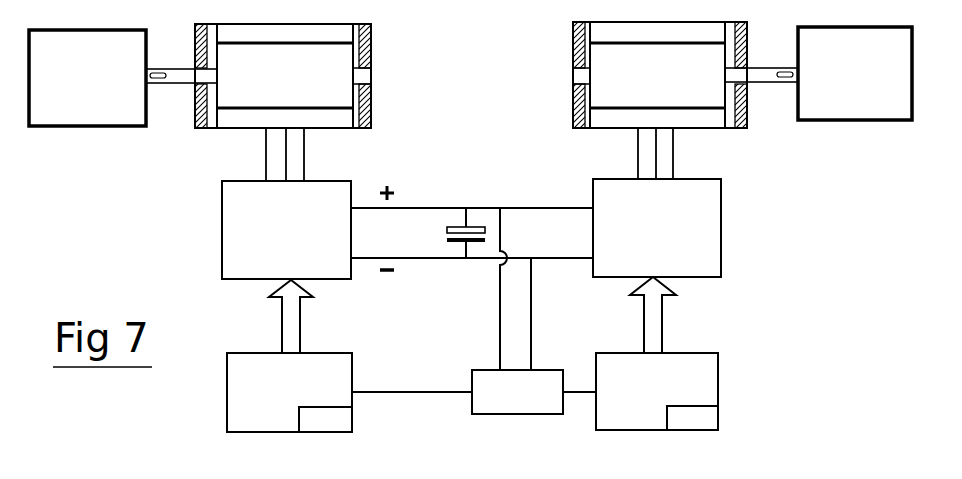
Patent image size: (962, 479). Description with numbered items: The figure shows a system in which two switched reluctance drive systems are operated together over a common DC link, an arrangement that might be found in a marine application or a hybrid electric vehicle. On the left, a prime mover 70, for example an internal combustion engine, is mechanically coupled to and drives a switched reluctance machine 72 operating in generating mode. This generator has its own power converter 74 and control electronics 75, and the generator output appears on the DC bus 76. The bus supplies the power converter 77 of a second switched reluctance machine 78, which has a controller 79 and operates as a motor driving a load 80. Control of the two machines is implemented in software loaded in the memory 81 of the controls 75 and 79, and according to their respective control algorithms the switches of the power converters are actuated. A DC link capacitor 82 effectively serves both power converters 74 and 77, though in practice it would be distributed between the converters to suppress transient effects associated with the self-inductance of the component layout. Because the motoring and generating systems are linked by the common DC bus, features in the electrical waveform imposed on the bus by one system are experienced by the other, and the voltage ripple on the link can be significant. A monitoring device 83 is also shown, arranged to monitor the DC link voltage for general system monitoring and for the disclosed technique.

The prime mover 70 is at (72, 127).
The switched reluctance machine 72 is at (371, 36).
The power converter 74 is at (222, 243).
The control electronics 75 is at (337, 353).
The DC bus 76 is at (517, 207).
The power converter 77 is at (722, 229).
The second switched reluctance machine 78 is at (566, 46).
The controller 79 is at (718, 360).
The load 80 is at (838, 122).
The memory 81 is at (327, 420).
The DC link capacitor 82 is at (447, 238).
The monitoring device 83 is at (472, 408).